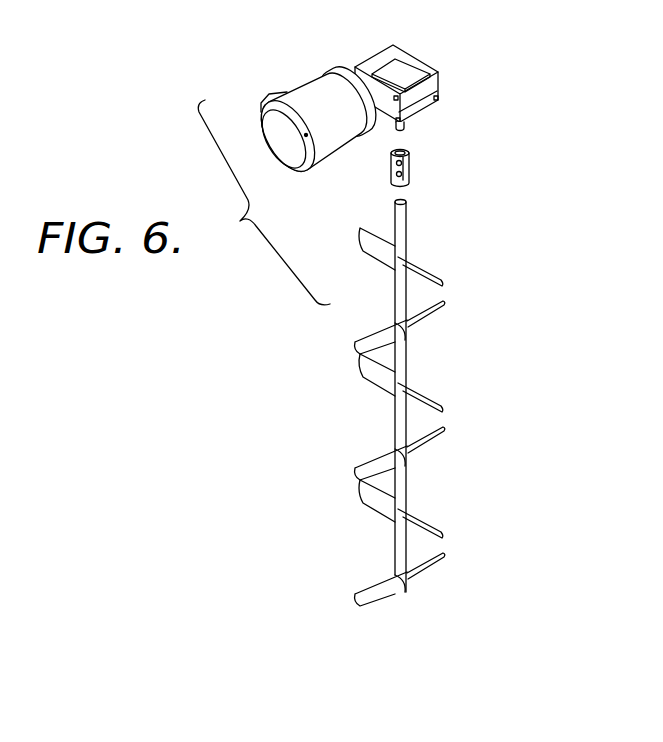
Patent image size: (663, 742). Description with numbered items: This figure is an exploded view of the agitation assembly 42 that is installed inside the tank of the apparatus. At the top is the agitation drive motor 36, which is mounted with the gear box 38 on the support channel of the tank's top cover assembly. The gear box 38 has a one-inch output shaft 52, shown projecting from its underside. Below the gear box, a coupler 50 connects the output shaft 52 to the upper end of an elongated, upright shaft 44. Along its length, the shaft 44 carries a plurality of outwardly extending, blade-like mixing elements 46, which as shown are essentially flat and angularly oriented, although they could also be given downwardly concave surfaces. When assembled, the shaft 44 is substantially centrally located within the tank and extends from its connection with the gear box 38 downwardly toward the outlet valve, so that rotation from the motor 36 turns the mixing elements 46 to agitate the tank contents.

The agitation drive motor 36 is at (313, 95).
The gear box 38 is at (405, 68).
The agitation assembly 42 is at (494, 89).
The shaft 44 is at (404, 238).
The mixing elements 46 is at (370, 243).
The coupler 50 is at (392, 170).
The output shaft 52 is at (405, 128).